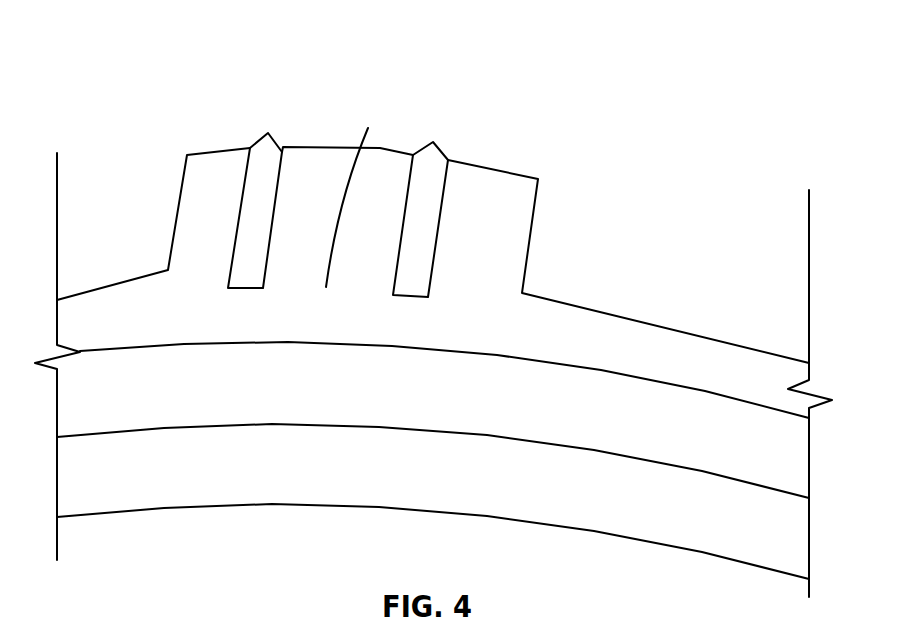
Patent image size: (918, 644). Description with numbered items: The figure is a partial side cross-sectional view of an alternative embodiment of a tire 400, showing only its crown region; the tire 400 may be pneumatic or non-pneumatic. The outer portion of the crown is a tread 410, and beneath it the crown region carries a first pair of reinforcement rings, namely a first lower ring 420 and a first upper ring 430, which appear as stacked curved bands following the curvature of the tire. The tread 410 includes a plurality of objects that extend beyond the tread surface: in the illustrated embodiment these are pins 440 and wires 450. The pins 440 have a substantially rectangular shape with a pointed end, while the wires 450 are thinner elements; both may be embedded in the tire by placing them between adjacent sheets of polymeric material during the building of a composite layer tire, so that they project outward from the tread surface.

The tire 400 is at (194, 58).
The tread 410 is at (202, 155).
The first lower ring 420 is at (587, 453).
The first upper ring 430 is at (648, 380).
The pins 440 is at (280, 150).
The wires 450 is at (368, 138).